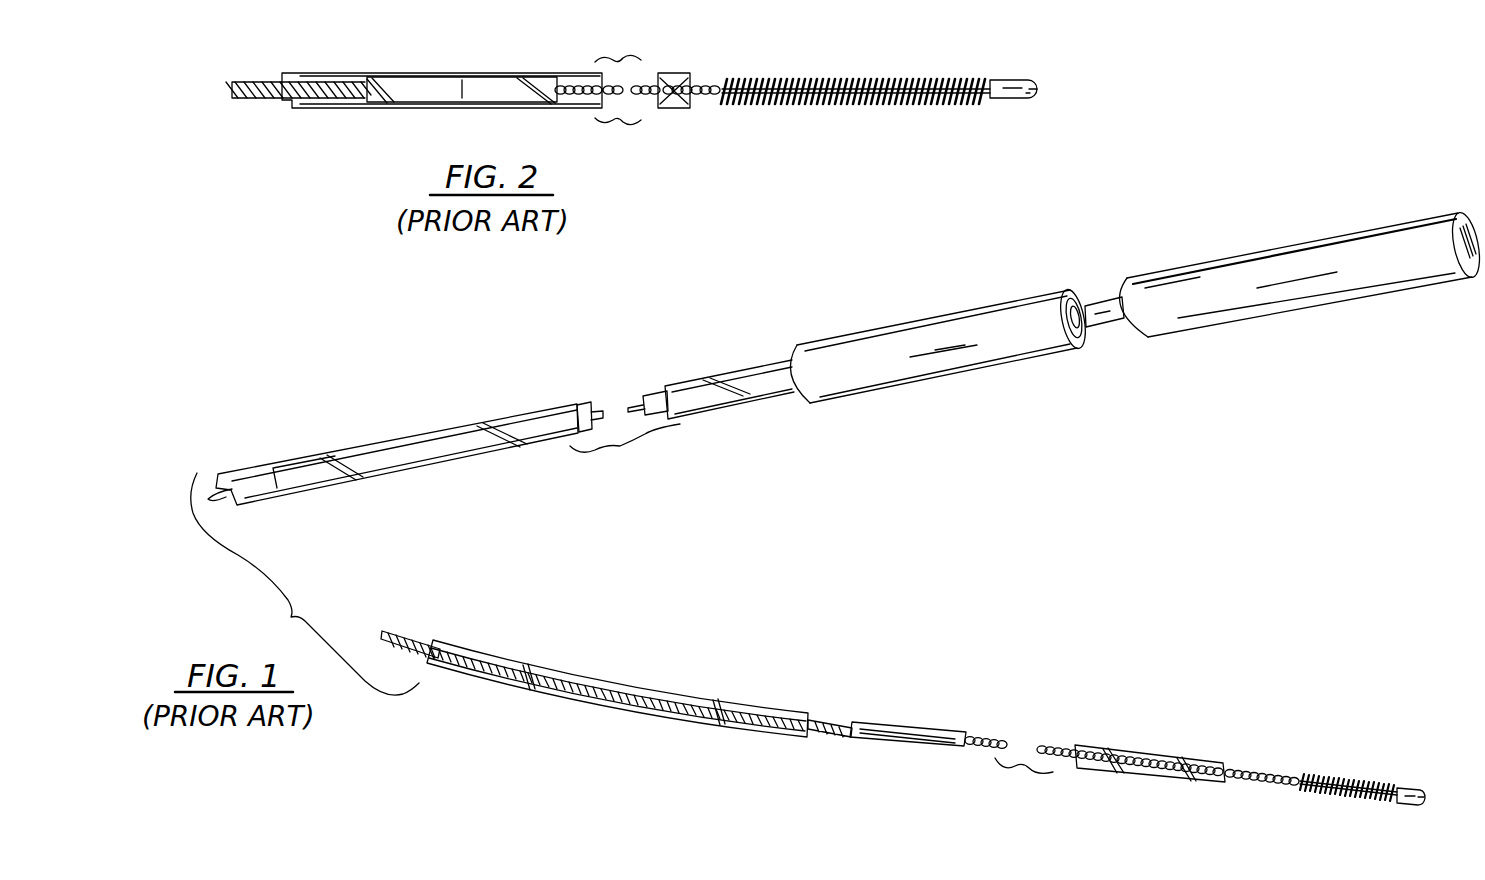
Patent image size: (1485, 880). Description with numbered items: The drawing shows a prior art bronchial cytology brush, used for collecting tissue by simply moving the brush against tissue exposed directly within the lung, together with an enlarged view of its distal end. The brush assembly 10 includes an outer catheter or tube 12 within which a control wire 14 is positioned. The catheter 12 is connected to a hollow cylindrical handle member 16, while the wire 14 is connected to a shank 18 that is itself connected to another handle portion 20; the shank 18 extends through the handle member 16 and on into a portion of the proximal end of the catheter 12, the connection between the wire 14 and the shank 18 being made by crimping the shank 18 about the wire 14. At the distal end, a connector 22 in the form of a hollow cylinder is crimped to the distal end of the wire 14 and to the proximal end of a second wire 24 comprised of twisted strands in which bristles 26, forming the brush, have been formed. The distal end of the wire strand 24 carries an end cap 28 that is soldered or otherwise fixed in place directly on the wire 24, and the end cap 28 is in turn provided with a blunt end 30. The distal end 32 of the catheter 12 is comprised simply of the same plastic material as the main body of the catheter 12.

In FIG. 1, the brush assembly 10 is at (1268, 543).
In FIG. 2, the outer catheter 12 is at (345, 110).
In FIG. 1, the outer catheter 12 is at (763, 708).
In FIG. 2, the control wire 14 is at (244, 72).
In FIG. 1, the control wire 14 is at (403, 640).
In FIG. 1, the handle member 16 is at (883, 330).
In FIG. 1, the shank 18 is at (392, 450).
In FIG. 1, the handle portion 20 is at (1242, 265).
In FIG. 2, the connector 22 is at (428, 85).
In FIG. 1, the connector 22 is at (912, 728).
In FIG. 2, the second wire 24 is at (698, 100).
In FIG. 1, the second wire 24 is at (983, 742).
In FIG. 2, the bristles 26 is at (819, 88).
In FIG. 1, the bristles 26 is at (1347, 785).
In FIG. 2, the end cap 28 is at (1017, 82).
In FIG. 1, the end cap 28 is at (1408, 790).
In FIG. 2, the blunt end 30 is at (1038, 88).
In FIG. 1, the blunt end 30 is at (1427, 802).
In FIG. 2, the distal end of catheter 32 is at (672, 73).
In FIG. 1, the distal end of catheter 32 is at (1217, 757).